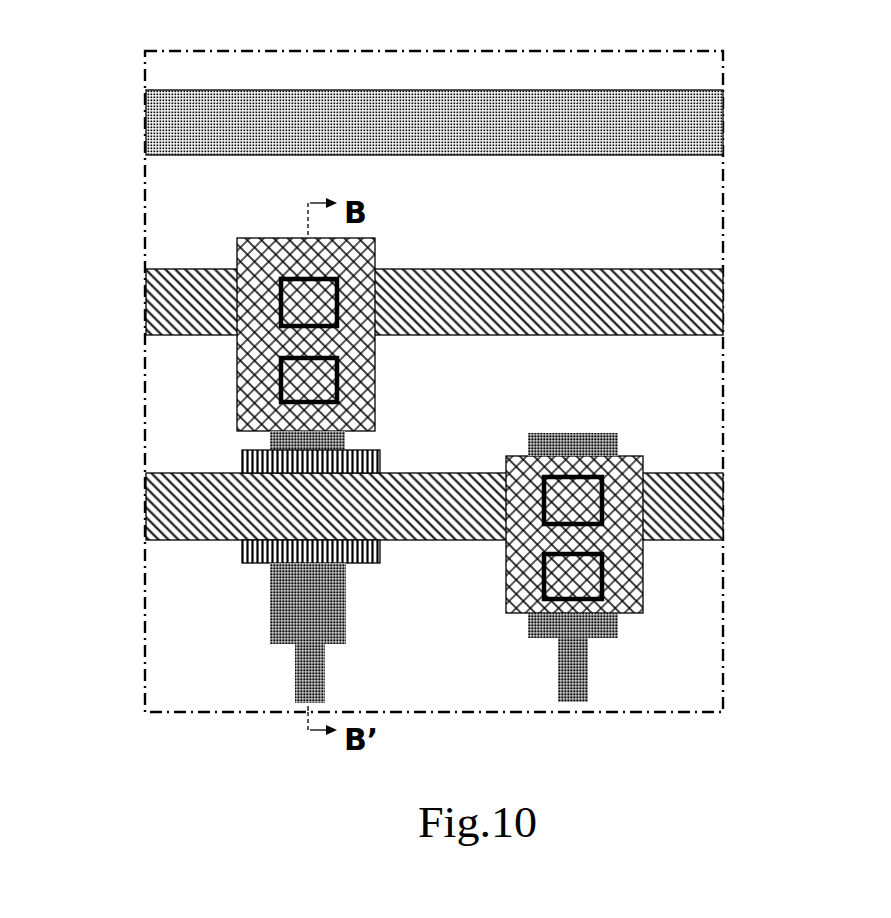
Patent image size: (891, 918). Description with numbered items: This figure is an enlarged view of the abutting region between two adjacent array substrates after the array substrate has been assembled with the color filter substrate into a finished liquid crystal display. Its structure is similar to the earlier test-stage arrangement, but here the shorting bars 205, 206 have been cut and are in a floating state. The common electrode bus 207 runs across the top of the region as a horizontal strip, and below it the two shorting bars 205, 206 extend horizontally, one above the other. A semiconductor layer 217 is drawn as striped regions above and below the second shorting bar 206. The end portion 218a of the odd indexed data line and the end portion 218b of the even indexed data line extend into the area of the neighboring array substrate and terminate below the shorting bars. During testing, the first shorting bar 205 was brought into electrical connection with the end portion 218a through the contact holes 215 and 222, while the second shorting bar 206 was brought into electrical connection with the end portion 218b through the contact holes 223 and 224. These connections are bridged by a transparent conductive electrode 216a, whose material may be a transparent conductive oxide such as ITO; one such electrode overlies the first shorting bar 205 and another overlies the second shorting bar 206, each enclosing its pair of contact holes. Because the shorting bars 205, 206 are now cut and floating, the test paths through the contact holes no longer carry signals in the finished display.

The shorting bar 205 is at (693, 295).
The shorting bar 206 is at (697, 518).
The common electrode bus 207 is at (683, 125).
The contact hole 215 is at (245, 288).
The transparent conductive electrode 216a is at (260, 392).
The semiconductor layer 217 is at (256, 549).
The end portion of odd indexed data line 218a is at (293, 610).
The end portion of even indexed data line 218b is at (612, 640).
The contact hole 222 is at (270, 377).
The contact hole 223 is at (612, 477).
The contact hole 224 is at (607, 578).